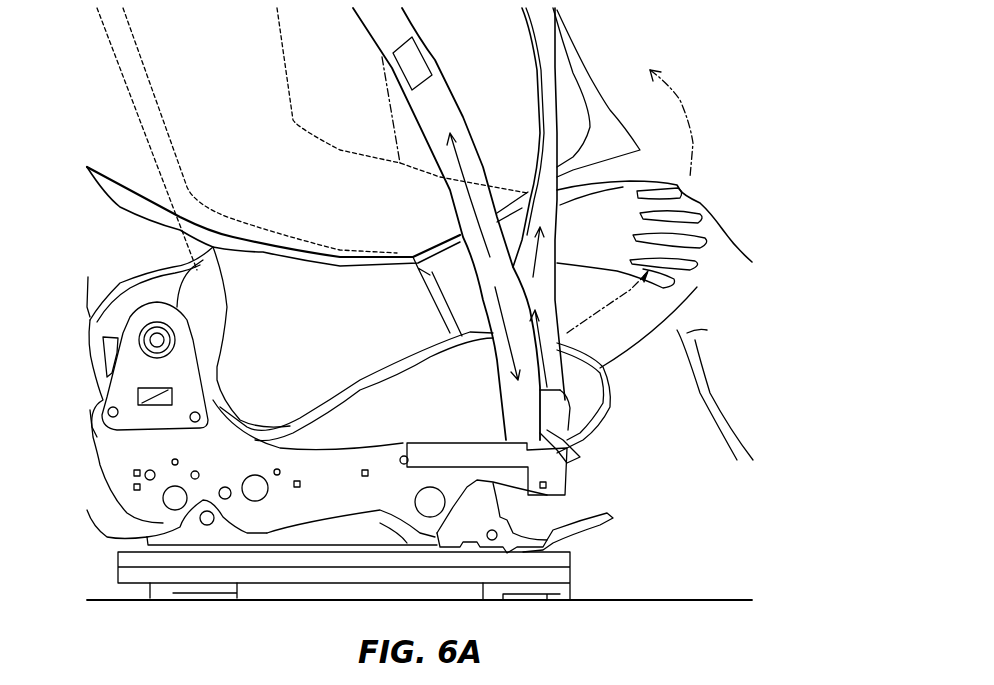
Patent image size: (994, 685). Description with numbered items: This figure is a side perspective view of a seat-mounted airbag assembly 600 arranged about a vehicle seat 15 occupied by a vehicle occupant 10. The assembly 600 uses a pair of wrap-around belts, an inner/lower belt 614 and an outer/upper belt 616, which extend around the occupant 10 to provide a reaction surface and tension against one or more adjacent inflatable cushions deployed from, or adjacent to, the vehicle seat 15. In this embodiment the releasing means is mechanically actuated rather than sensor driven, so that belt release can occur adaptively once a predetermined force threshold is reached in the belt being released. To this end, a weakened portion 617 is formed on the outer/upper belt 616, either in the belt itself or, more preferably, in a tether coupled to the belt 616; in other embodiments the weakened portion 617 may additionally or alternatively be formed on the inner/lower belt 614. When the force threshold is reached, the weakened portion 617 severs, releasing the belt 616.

The vehicle occupant 10 is at (737, 240).
The vehicle seat 15 is at (123, 448).
The seat-mounted airbag assembly 600 is at (699, 93).
The inner/lower belt 614 is at (440, 87).
The outer/upper belt 616 is at (550, 117).
The weakened portion 617 is at (556, 410).